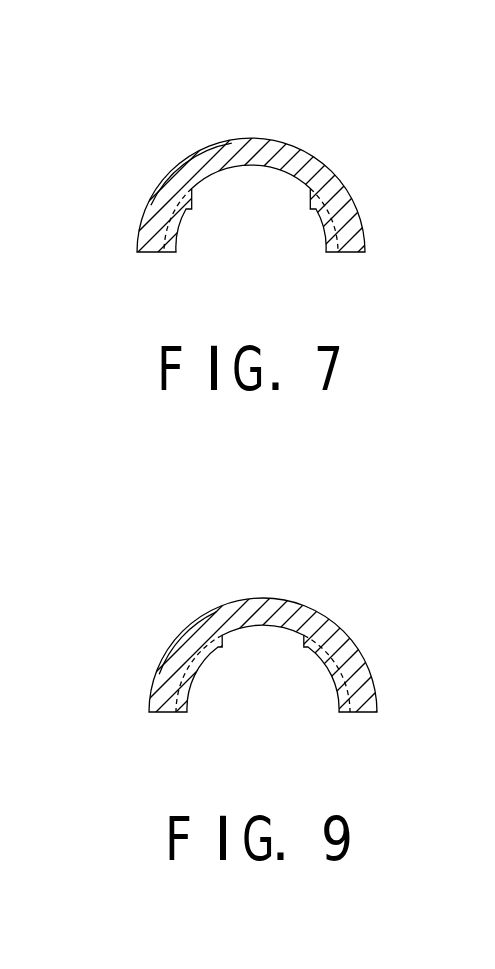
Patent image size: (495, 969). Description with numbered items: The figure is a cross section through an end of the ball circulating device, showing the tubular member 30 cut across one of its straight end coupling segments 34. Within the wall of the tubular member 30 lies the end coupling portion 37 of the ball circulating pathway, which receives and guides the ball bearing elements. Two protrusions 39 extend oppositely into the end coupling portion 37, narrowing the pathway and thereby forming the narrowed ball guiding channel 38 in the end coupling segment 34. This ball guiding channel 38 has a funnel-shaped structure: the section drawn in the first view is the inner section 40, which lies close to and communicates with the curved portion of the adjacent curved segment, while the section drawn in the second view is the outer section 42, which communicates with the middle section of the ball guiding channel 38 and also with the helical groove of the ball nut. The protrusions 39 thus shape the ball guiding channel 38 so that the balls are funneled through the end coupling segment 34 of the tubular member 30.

In FIG. 7, the tubular member 30 is at (197, 150).
In FIG. 9, the tubular member 30 is at (188, 623).
In FIG. 7, the end coupling segment 34 is at (325, 165).
In FIG. 9, the end coupling segment 34 is at (160, 662).
In FIG. 7, the end coupling portion 37 is at (252, 227).
In FIG. 9, the end coupling portion 37 is at (267, 693).
In FIG. 7, the ball guiding channel 38 is at (222, 183).
In FIG. 9, the ball guiding channel 38 is at (243, 637).
In FIG. 7, the protrusion 39 is at (179, 248).
In FIG. 9, the protrusion 39 is at (189, 704).
In FIG. 7, the inner section 40 is at (273, 175).
In FIG. 9, the outer section 42 is at (282, 630).